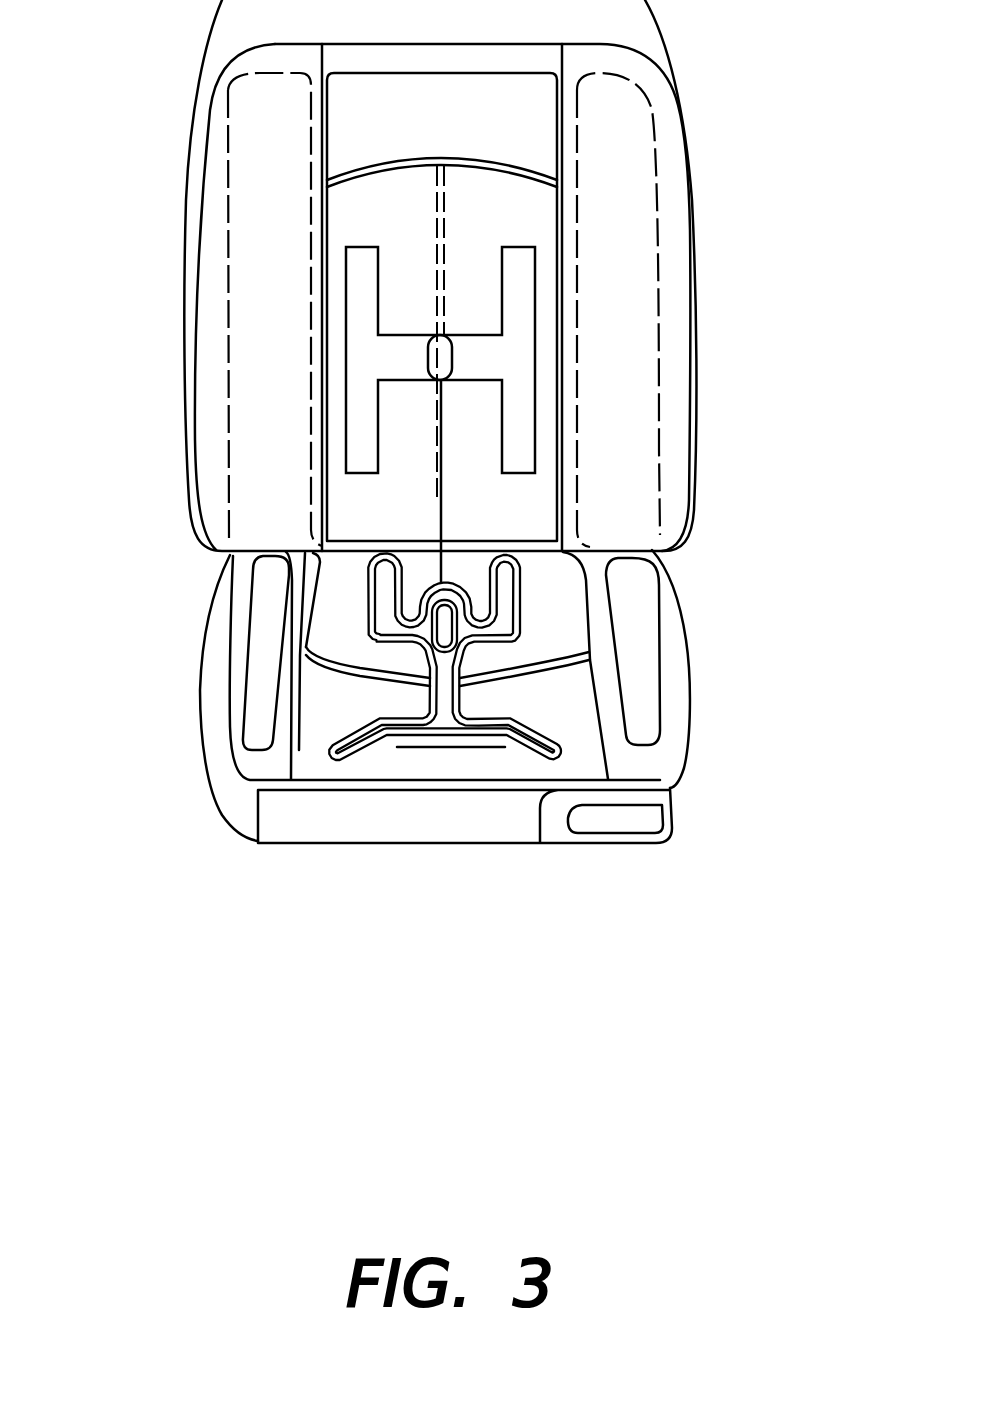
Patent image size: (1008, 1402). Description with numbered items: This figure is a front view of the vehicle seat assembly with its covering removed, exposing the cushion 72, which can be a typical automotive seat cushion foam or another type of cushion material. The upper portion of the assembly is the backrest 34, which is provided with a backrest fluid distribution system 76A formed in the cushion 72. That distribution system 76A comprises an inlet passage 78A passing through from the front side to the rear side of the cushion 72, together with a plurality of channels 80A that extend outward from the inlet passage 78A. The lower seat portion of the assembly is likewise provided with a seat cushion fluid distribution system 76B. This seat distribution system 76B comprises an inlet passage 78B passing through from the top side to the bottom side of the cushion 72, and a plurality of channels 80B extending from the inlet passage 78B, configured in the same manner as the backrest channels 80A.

The backrest 34 is at (708, 156).
The cushion 72 is at (620, 127).
The backrest fluid distribution system 76A is at (431, 363).
The inlet passage 78A is at (454, 351).
The channels 80A is at (537, 427).
The seat cushion fluid distribution system 76B is at (578, 656).
The inlet passage 78B is at (458, 625).
The channels 80B is at (553, 737).